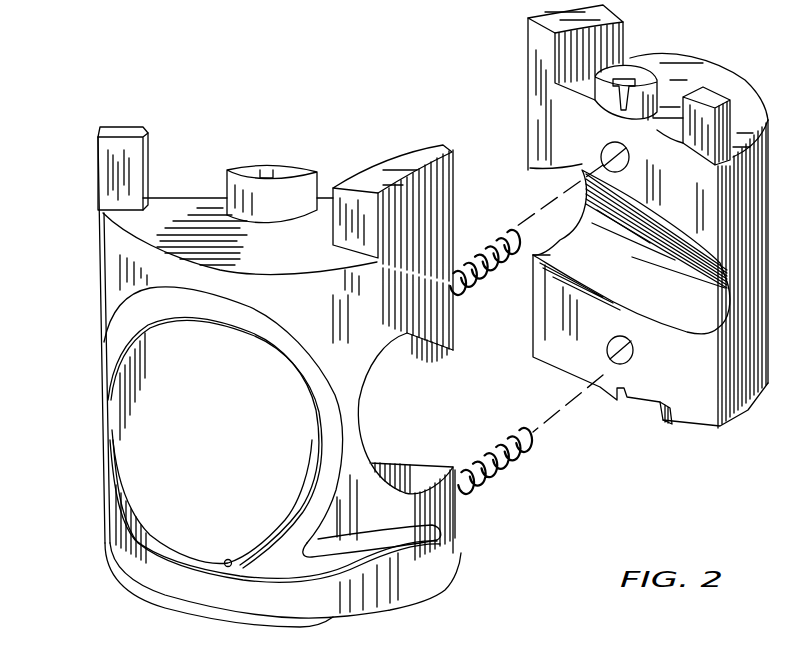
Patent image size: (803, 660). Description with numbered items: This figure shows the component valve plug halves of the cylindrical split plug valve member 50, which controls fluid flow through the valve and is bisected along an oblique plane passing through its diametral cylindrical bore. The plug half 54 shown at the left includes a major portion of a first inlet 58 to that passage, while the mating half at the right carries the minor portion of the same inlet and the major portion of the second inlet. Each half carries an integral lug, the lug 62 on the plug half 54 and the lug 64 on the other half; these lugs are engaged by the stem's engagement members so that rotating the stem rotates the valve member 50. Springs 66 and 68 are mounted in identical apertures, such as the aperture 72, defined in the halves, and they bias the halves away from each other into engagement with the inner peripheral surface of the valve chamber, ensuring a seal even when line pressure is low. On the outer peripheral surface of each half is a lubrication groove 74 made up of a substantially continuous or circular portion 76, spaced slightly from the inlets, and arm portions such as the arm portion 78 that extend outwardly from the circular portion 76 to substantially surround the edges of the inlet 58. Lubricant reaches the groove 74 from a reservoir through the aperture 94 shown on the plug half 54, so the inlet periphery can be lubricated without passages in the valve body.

The cylindrical split plug valve member 50 is at (330, 128).
The plug half 54 is at (113, 250).
The first inlet 58 is at (365, 363).
The lug 62 is at (403, 157).
The lug 64 is at (535, 50).
The spring 66 is at (505, 478).
The spring 68 is at (483, 230).
The aperture 72 is at (606, 350).
The groove 74 is at (96, 343).
The circular portion 76 is at (312, 506).
The arm portion 78 is at (395, 548).
The aperture 94 is at (233, 559).